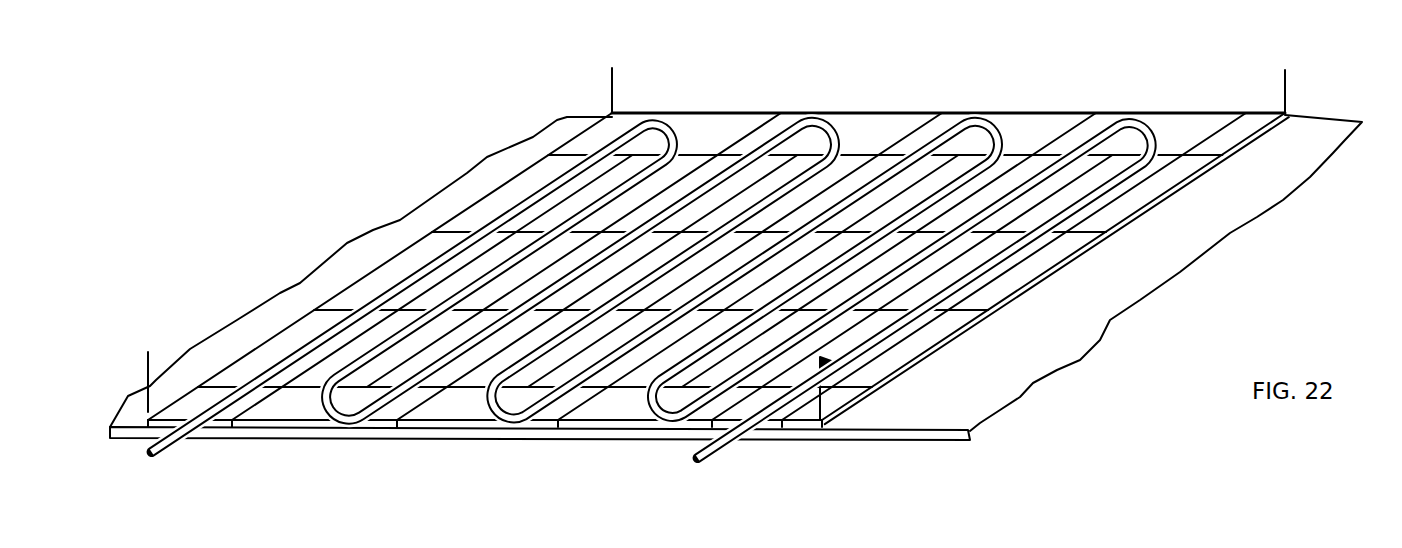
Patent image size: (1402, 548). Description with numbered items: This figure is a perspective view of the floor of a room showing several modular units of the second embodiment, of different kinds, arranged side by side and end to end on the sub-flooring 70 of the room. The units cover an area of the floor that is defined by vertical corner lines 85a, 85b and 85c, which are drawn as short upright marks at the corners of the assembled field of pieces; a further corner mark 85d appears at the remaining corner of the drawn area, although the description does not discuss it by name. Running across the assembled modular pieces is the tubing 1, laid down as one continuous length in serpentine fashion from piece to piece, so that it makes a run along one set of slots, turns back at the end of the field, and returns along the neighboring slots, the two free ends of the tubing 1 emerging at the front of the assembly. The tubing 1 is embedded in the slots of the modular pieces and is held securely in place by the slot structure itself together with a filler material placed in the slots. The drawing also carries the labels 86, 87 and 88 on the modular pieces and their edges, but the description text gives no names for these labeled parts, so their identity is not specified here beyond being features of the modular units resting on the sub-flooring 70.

The tubing 1 is at (162, 450).
The sub-flooring 70 is at (1110, 296).
The vertical corner line 85a is at (147, 372).
The vertical corner line 85b is at (613, 85).
The vertical corner line 85c is at (1283, 89).
The panel corner 85d is at (835, 362).
The tile 86 is at (517, 188).
The tile strip 87 is at (727, 119).
The edge rail 88 is at (1218, 150).